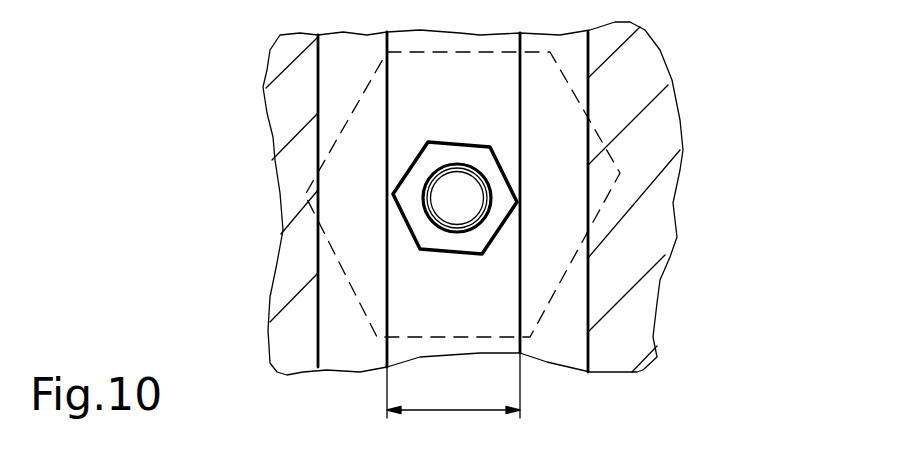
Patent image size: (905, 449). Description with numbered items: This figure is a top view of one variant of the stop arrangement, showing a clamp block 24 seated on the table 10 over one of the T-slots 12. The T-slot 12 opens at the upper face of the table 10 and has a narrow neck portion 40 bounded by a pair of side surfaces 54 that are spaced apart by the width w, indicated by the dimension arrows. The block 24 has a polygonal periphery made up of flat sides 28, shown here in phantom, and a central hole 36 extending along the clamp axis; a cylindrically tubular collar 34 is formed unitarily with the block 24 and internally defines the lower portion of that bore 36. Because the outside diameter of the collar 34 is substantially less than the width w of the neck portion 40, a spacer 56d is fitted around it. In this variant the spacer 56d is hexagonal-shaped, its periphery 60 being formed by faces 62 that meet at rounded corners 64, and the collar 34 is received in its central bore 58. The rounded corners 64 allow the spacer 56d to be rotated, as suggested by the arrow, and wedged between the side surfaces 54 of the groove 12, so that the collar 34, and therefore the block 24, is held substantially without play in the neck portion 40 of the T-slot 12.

The table 10 is at (637, 313).
The T-slot 12 is at (403, 70).
The clamp block 24 is at (620, 173).
The flat side 28 is at (590, 150).
The cylindrically tubular collar 34 is at (518, 234).
The central hole 36 is at (468, 200).
The neck portion 40 is at (590, 75).
The side surface 54 is at (525, 338).
The hexagonal-shaped spacer 56d is at (422, 165).
The bore 58 is at (423, 200).
The periphery 60 is at (445, 275).
The face 62 is at (478, 227).
The rounded corner 64 is at (420, 143).